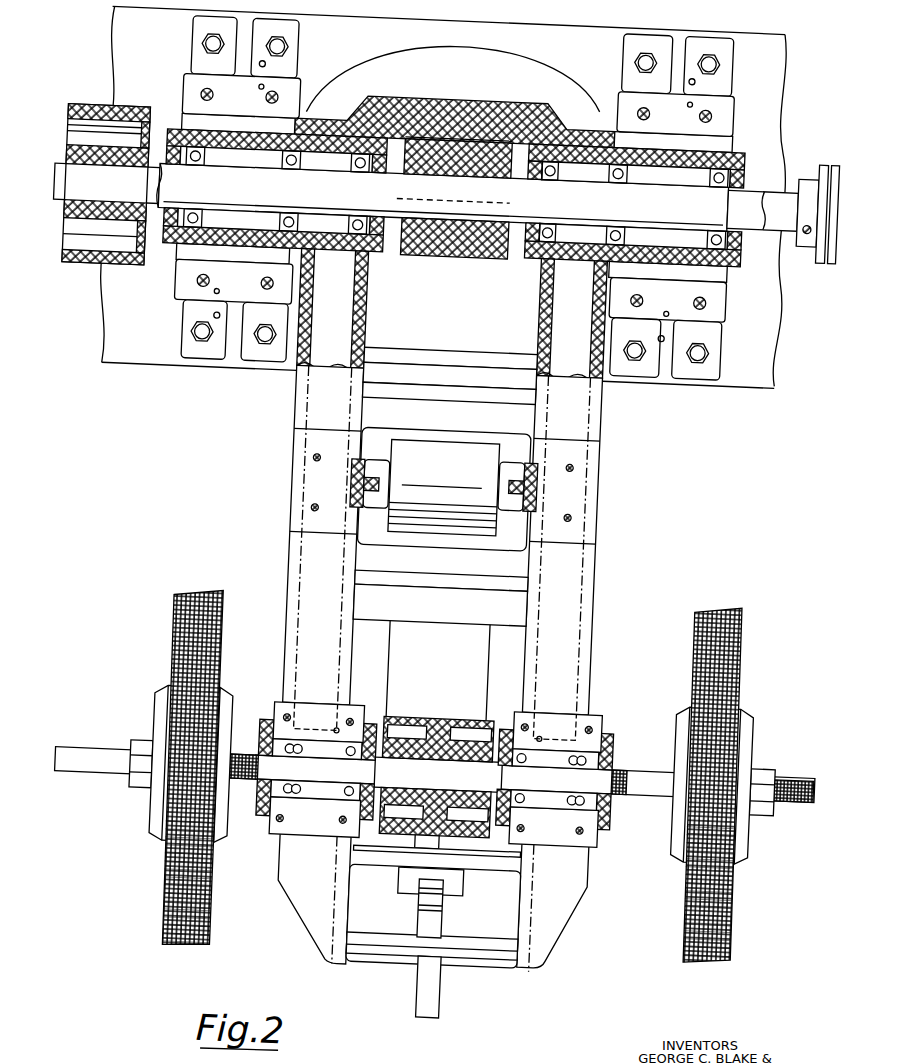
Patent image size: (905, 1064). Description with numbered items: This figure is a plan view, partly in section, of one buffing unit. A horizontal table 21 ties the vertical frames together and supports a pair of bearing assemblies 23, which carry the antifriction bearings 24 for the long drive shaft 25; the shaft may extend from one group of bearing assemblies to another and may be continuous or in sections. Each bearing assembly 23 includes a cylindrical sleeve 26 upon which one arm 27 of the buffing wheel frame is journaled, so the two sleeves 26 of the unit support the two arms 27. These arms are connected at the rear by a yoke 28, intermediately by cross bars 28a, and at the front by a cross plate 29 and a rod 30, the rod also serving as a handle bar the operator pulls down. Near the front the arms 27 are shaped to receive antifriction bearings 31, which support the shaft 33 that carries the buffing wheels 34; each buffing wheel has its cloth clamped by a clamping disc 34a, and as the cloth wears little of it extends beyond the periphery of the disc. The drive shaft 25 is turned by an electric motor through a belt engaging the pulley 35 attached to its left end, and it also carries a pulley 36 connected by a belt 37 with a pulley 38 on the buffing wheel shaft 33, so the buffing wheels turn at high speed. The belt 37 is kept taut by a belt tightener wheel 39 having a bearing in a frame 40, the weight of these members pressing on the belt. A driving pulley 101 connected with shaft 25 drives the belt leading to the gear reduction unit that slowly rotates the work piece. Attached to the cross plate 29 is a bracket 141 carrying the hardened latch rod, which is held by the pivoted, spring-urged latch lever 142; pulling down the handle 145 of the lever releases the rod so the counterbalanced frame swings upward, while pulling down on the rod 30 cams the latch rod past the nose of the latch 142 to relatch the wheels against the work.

The table 21 is at (477, 21).
The bearing assembly 23 is at (179, 324).
The antifriction bearings 24 is at (196, 170).
The shaft 25 is at (736, 182).
The cylindrical sleeve 26 is at (225, 144).
The arm 27 is at (313, 125).
The yoke 28 is at (420, 50).
The cross bars 28a is at (425, 359).
The cross plate 29 is at (370, 867).
The rod 30 is at (379, 950).
The antifriction bearings 31 is at (332, 812).
The shaft 33 is at (475, 759).
The buffing wheels 34 is at (192, 942).
The clamping disc 34a is at (175, 822).
The pulley 35 is at (67, 122).
The pulley 36 is at (398, 257).
The belt 37 is at (413, 136).
The pulley 38 is at (430, 703).
The belt tightener wheel 39 is at (452, 447).
The frame 40 is at (349, 487).
The driving pulley 101 is at (795, 152).
The bracket 141 is at (420, 895).
The latch lever 142 is at (458, 898).
The handle 145 is at (458, 1016).